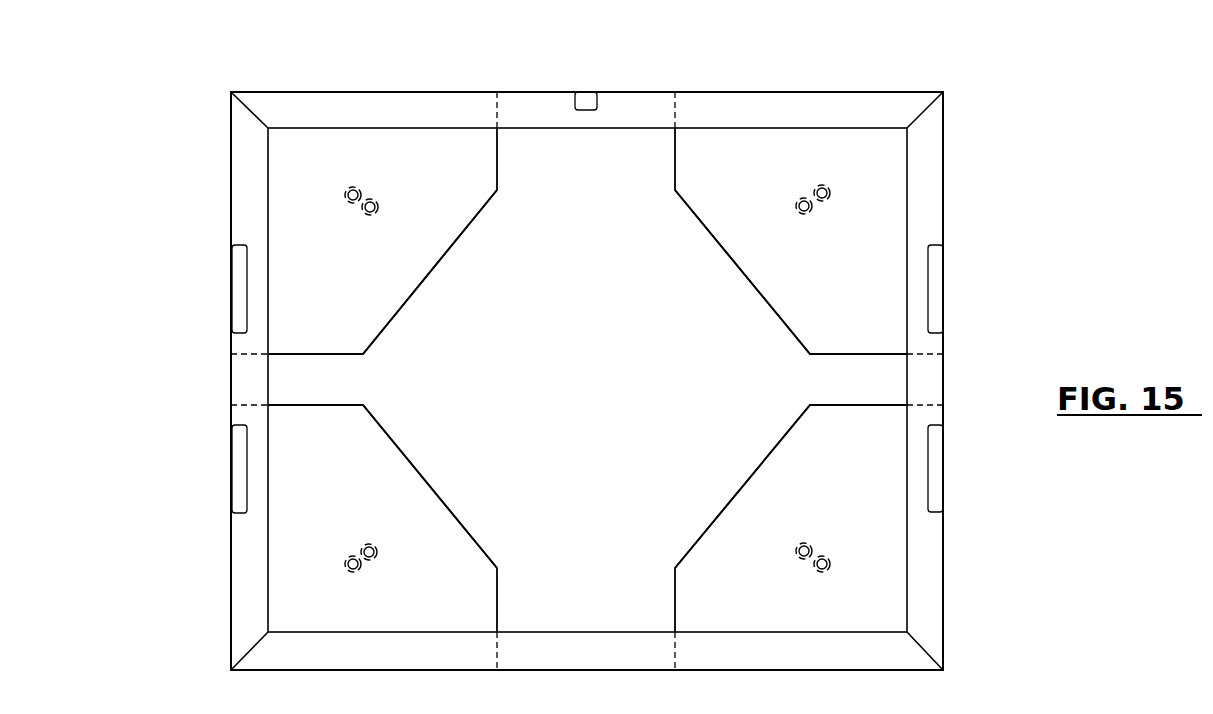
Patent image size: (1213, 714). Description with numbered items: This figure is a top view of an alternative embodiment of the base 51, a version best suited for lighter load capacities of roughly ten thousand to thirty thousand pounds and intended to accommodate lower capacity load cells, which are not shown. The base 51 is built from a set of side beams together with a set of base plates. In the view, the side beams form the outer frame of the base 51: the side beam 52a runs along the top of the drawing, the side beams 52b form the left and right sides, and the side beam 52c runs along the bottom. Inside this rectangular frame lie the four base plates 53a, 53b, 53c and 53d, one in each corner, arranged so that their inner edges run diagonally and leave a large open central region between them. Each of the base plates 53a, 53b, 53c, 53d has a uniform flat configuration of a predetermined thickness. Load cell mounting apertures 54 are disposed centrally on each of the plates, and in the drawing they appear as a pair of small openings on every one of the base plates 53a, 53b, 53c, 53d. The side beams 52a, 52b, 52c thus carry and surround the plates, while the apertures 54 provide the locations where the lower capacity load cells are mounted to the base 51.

The base 51 is at (870, 82).
The side beam 52a is at (546, 84).
The side beam 52b is at (221, 399).
The side beam 52c is at (577, 705).
The base plate 53a is at (451, 258).
The base plate 53b is at (451, 502).
The base plate 53c is at (729, 496).
The base plate 53d is at (711, 249).
The load cell mounting apertures 54 is at (365, 214).